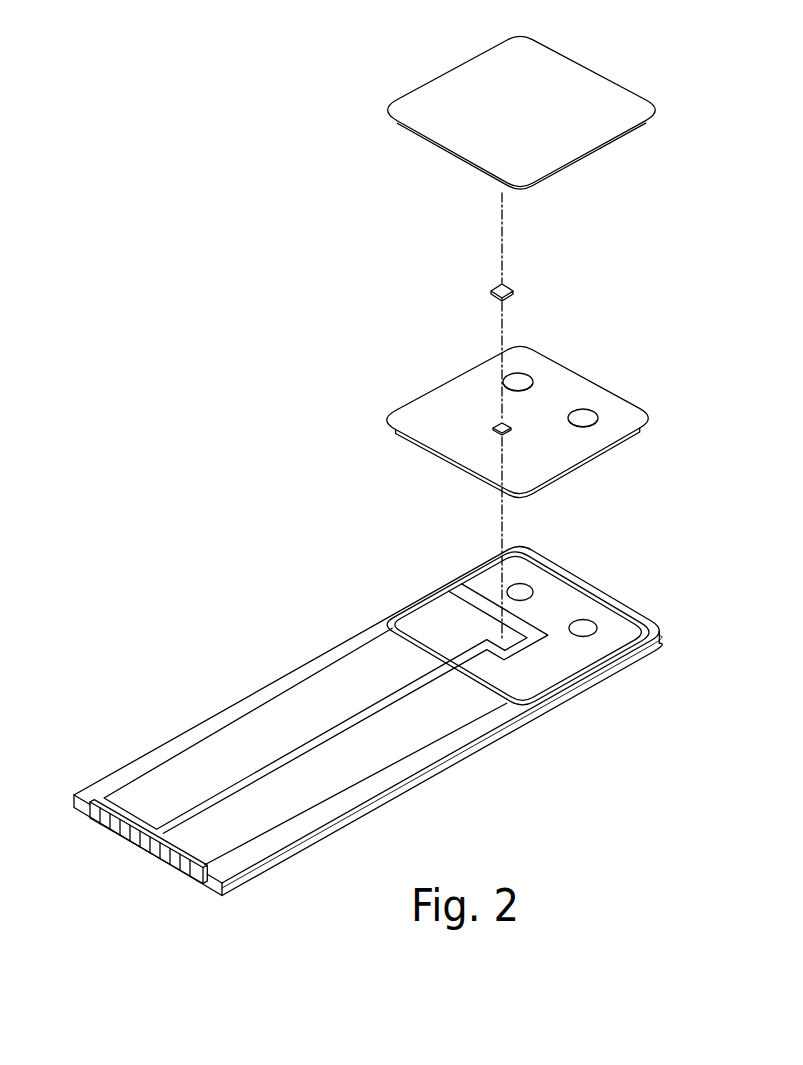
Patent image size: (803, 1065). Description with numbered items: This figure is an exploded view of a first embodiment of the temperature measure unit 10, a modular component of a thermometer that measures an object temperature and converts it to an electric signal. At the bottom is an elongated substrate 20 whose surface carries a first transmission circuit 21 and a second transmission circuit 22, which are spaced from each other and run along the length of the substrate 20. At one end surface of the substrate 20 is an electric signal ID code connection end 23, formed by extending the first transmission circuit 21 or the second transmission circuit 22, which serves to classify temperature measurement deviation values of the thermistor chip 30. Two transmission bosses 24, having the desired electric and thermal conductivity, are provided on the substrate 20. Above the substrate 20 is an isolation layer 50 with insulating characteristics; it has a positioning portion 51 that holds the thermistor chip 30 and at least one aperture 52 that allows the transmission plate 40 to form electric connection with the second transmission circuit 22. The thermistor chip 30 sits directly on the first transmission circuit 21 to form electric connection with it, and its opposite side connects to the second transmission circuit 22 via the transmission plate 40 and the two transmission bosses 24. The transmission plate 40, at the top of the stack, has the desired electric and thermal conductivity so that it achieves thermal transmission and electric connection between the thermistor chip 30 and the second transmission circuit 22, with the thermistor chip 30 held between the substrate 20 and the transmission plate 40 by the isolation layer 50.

The temperature measure unit 10 is at (284, 90).
The substrate 20 is at (380, 737).
The first transmission circuit 21 is at (232, 755).
The second transmission circuit 22 is at (322, 780).
The electric signal ID code connection end 23 is at (154, 847).
The transmission bosses 24 is at (580, 626).
The thermistor chip 30 is at (509, 288).
The transmission plate 40 is at (578, 76).
The isolation layer 50 is at (519, 404).
The positioning portion 51 is at (494, 427).
The aperture 52 is at (593, 419).